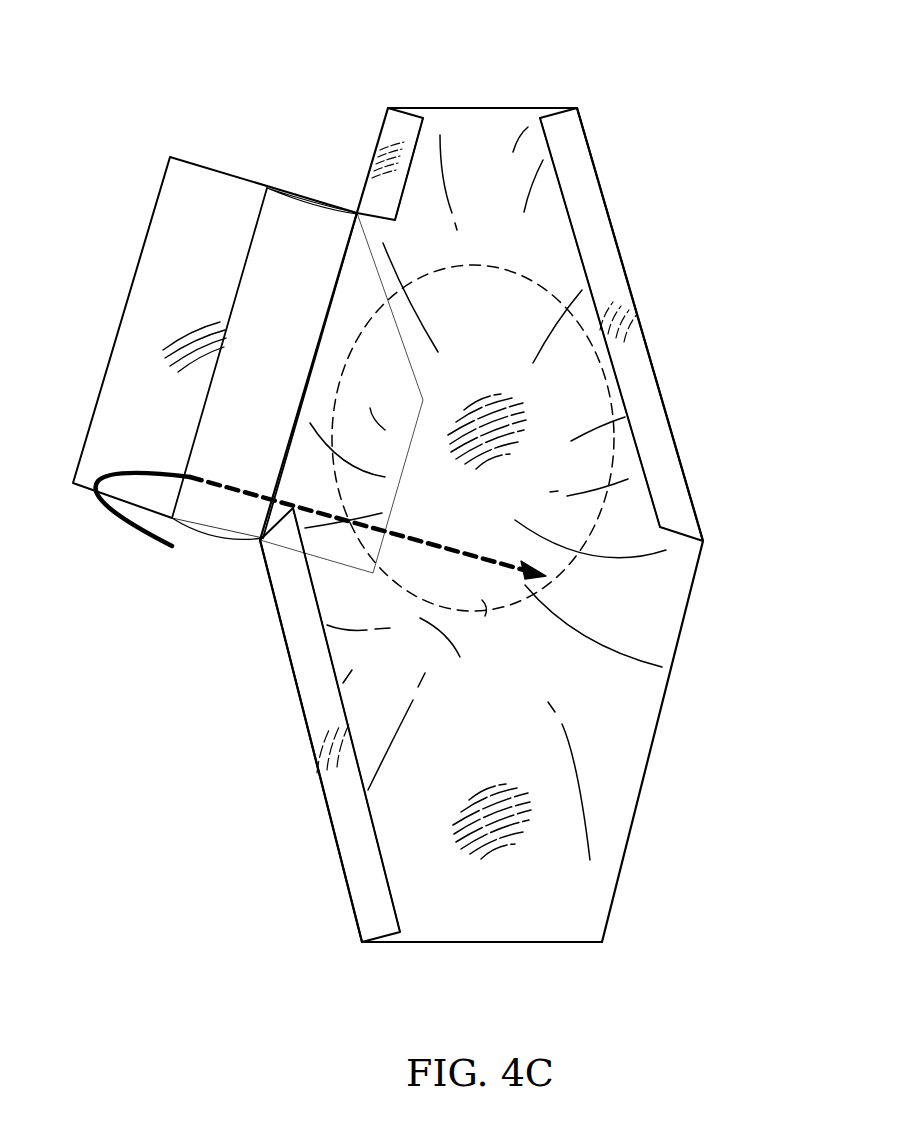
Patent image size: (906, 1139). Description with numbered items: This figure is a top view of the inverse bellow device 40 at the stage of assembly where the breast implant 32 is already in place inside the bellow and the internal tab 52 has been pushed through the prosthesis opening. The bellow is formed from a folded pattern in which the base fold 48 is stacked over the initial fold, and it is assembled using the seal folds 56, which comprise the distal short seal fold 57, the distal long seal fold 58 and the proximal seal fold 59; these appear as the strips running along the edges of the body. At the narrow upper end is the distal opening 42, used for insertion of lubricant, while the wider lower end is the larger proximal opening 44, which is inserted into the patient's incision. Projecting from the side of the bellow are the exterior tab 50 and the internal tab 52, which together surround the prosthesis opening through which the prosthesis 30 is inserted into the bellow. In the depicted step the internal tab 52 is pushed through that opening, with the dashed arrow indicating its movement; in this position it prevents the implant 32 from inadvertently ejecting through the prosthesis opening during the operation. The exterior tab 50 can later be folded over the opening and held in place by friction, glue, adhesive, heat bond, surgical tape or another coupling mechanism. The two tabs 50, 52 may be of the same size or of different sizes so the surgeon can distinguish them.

The prosthesis 30 is at (498, 255).
The breast implant 32 is at (485, 613).
The inverse bellow device 40 is at (705, 232).
The distal opening 42 is at (468, 96).
The proximal opening 44 is at (490, 964).
The base fold 48 is at (467, 516).
The exterior tab 50 is at (142, 286).
The internal tab 52 is at (212, 413).
The seal folds 56 is at (364, 184).
The distal short seal fold 57 is at (388, 130).
The distal long seal fold 58 is at (587, 178).
The proximal seal fold 59 is at (348, 852).